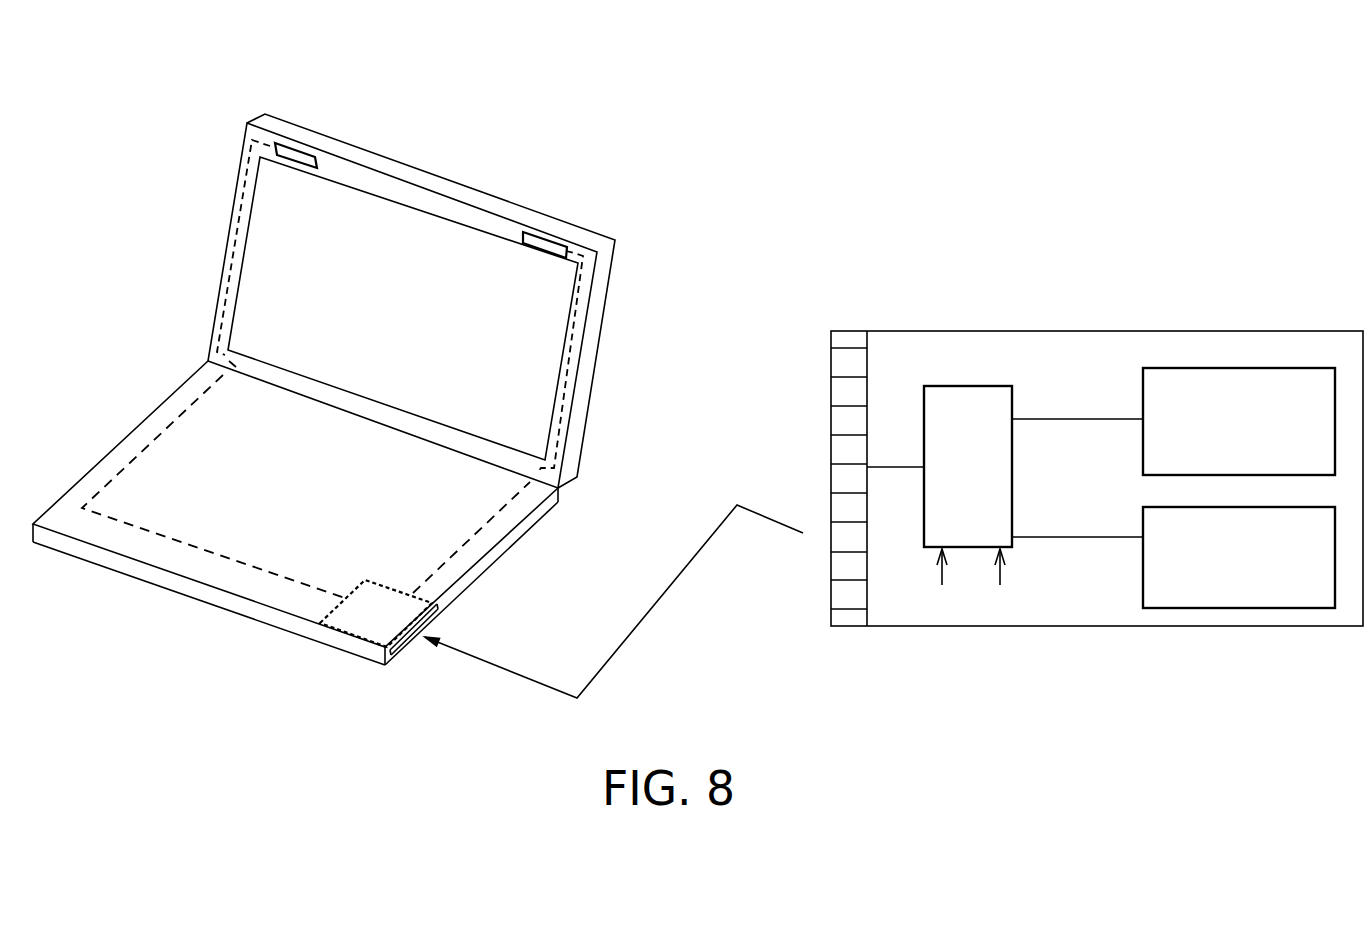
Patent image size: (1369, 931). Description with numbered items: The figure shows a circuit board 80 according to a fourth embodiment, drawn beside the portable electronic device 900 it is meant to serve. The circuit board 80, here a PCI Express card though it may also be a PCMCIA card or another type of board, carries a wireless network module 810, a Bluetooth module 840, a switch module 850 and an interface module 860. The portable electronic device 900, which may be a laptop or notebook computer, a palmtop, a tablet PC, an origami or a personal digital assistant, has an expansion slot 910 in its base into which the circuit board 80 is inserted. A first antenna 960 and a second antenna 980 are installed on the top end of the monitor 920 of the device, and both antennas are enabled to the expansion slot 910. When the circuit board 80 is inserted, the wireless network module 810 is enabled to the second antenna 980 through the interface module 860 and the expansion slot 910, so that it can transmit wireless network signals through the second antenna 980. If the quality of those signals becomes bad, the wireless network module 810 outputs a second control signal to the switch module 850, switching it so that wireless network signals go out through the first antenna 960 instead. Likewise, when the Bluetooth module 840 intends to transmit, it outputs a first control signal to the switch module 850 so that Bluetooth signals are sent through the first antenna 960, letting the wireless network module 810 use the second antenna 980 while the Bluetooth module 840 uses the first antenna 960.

The portable electronic device 900 is at (158, 400).
The monitor 920 is at (603, 290).
The first antenna 960 is at (297, 144).
The second antenna 980 is at (545, 236).
The expansion slot 910 is at (437, 607).
The circuit board 80 is at (1120, 626).
The interface module 860 is at (852, 627).
The switch module 850 is at (978, 386).
The wireless network module 810 is at (1238, 368).
The Bluetooth module 840 is at (1255, 608).